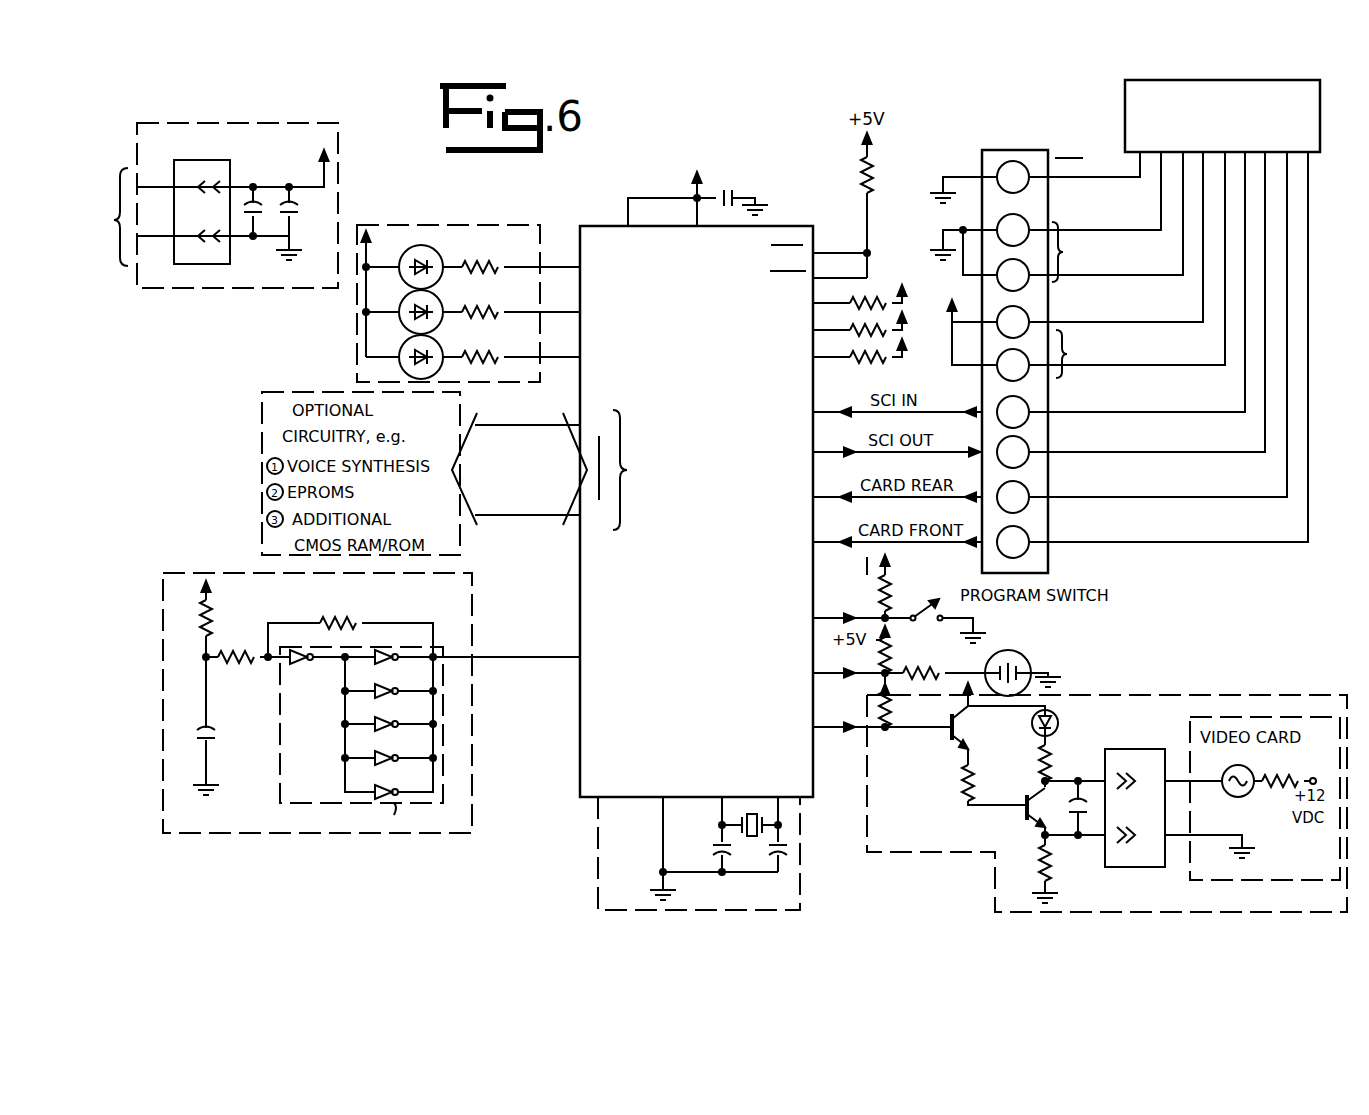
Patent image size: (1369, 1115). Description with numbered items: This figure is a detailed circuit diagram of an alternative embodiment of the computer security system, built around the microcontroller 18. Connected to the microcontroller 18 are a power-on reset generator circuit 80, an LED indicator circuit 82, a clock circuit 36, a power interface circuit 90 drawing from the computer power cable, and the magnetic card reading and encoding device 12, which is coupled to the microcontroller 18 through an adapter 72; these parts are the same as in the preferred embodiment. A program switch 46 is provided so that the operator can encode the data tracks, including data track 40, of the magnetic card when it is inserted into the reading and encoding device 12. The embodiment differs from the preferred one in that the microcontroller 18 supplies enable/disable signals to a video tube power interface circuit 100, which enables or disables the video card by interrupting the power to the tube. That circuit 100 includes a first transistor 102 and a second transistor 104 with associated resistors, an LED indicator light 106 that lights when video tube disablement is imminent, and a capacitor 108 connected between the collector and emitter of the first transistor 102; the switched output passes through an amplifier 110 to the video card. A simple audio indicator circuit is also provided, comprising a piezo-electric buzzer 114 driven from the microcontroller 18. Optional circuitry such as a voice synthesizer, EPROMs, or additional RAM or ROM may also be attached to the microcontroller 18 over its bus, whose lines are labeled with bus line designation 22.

The magnetic card reading and encoding device 12 is at (1320, 122).
The microcontroller 18 is at (707, 575).
The bus lines 22 is at (607, 470).
The clock circuit 36 is at (598, 854).
The data track 40 is at (599, 458).
The program switch 46 is at (916, 610).
The adapter 72 is at (1050, 560).
The power-on reset generator circuit 80 is at (420, 833).
The LED indicator circuit 82 is at (487, 225).
The power interface circuit 90 is at (340, 165).
The video tube power interface circuit 100 is at (1252, 912).
The first transistor 102 is at (1018, 815).
The second transistor 104 is at (946, 738).
The LED indicator light 106 is at (1058, 718).
The capacitor 108 is at (1078, 830).
The amplifier 110 is at (1135, 749).
The piezo-electric buzzer 114 is at (1022, 660).